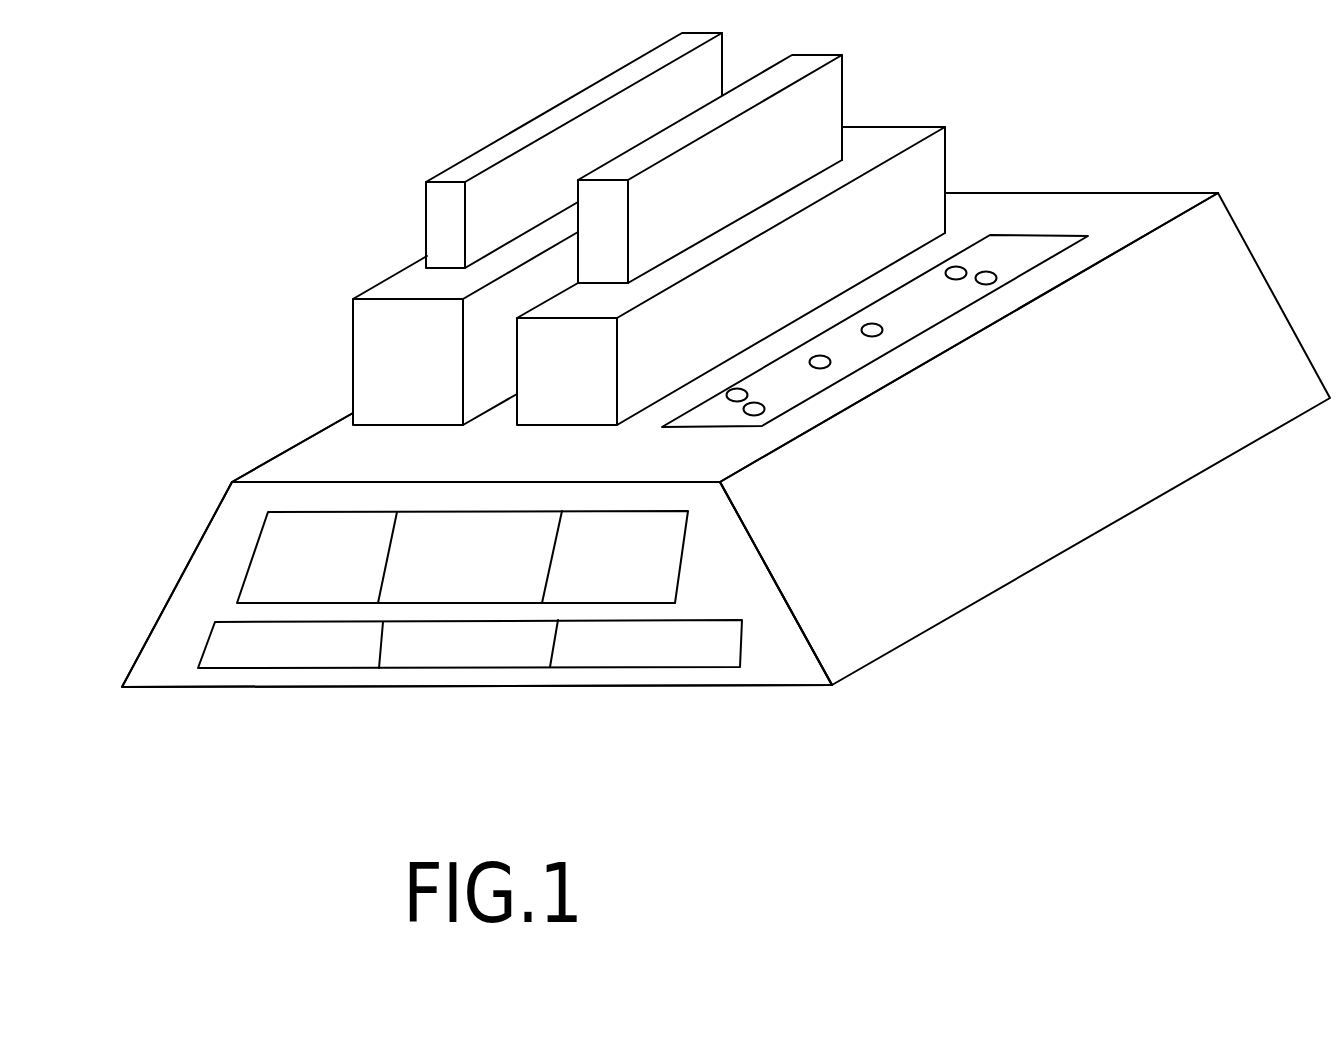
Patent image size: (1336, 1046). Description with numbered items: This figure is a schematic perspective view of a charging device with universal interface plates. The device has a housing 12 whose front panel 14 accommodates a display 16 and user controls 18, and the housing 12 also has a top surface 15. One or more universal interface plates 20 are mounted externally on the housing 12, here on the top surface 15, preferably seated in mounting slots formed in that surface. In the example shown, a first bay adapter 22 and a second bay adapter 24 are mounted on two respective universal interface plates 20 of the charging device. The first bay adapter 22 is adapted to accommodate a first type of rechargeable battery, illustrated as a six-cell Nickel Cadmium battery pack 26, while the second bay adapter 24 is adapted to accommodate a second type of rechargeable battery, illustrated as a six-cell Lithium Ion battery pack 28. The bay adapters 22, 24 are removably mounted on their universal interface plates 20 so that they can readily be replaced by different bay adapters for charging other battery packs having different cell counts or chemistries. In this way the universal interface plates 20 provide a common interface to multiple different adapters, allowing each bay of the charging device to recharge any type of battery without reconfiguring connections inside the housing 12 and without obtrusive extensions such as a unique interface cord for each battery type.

The housing 12 is at (1215, 237).
The front panel 14 is at (198, 602).
The top surface 15 is at (705, 450).
The display 16 is at (658, 563).
The user controls 18 is at (620, 650).
The universal interface plate 20 is at (1065, 240).
The first bay adapter 22 is at (917, 183).
The second bay adapter 24 is at (390, 353).
The Nickel Cadmium battery pack 26 is at (827, 106).
The Lithium Ion battery pack 28 is at (443, 217).